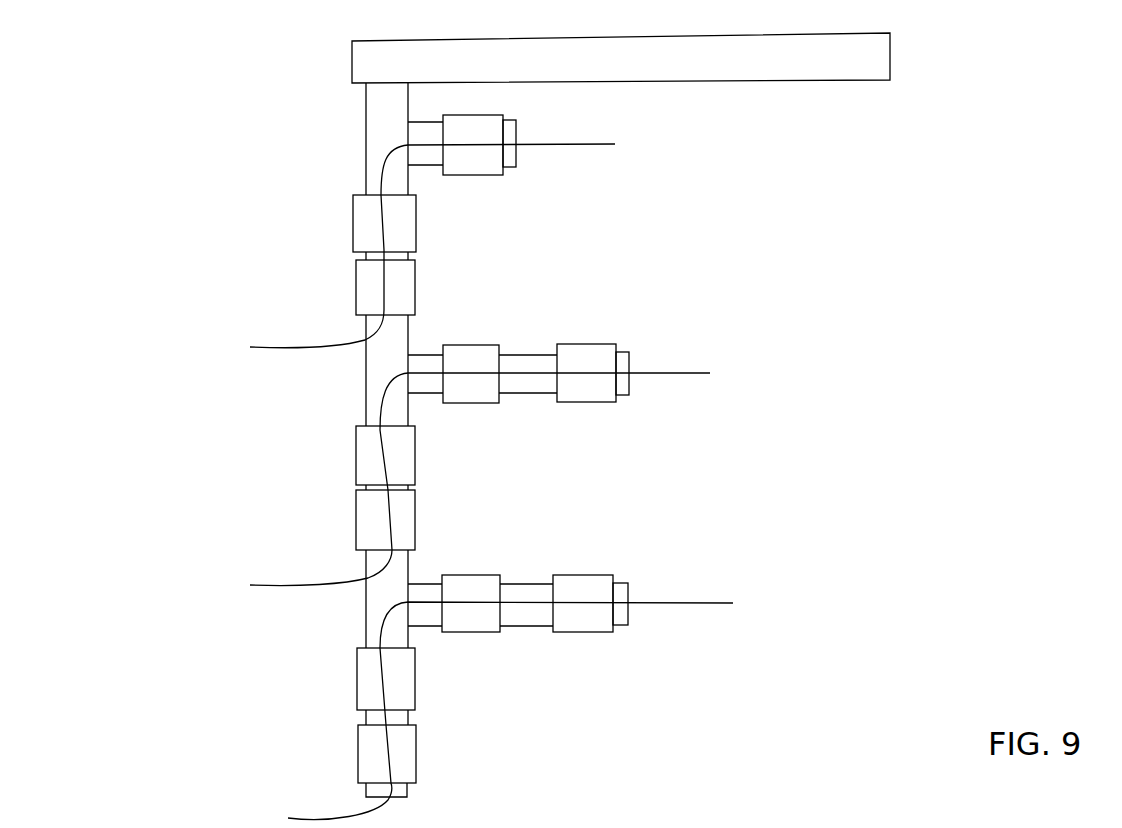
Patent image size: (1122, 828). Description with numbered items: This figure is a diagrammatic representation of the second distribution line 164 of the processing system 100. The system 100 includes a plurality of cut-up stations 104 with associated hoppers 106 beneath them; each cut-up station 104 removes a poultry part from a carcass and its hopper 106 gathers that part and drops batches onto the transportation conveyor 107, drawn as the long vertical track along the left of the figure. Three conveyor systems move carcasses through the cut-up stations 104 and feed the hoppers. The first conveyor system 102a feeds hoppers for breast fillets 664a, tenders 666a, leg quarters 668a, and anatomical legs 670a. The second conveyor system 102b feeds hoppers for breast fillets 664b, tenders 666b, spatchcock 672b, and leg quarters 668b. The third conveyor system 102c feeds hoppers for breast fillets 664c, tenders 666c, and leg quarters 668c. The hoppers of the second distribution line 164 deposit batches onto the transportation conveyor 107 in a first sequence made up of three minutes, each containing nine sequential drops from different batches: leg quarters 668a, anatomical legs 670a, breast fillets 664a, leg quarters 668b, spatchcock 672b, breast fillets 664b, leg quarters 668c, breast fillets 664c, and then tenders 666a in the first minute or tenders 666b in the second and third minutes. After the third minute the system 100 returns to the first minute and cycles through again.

The processing system 100 is at (787, 291).
The transportation conveyor 107 is at (321, 152).
The second distribution line 164 is at (544, 463).
The first conveyor system 102a is at (697, 603).
The second conveyor system 102b is at (660, 373).
The third conveyor system 102c is at (583, 143).
The breast fillets hopper 664a is at (416, 737).
The breast fillets hopper 664b is at (415, 538).
The breast fillets hopper 664c is at (416, 300).
The tenders hopper 666a is at (415, 685).
The tenders hopper 666b is at (415, 468).
The tenders hopper 666c is at (416, 232).
The leg quarters hopper 668a is at (598, 632).
The leg quarters hopper 668b is at (585, 402).
The leg quarters hopper 668c is at (478, 175).
The anatomical legs hopper 670a is at (478, 632).
The spatchcock hopper 672b is at (466, 403).
The cut-up station 104 is at (449, 748).
The hopper 106 is at (435, 787).